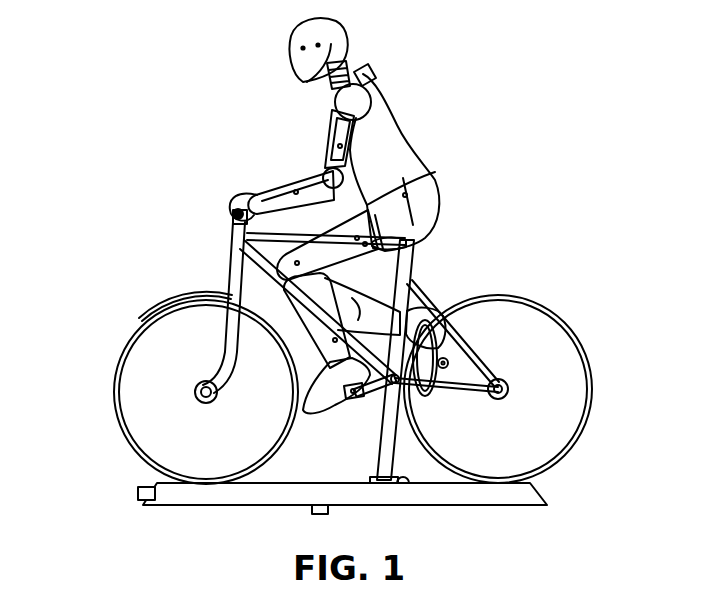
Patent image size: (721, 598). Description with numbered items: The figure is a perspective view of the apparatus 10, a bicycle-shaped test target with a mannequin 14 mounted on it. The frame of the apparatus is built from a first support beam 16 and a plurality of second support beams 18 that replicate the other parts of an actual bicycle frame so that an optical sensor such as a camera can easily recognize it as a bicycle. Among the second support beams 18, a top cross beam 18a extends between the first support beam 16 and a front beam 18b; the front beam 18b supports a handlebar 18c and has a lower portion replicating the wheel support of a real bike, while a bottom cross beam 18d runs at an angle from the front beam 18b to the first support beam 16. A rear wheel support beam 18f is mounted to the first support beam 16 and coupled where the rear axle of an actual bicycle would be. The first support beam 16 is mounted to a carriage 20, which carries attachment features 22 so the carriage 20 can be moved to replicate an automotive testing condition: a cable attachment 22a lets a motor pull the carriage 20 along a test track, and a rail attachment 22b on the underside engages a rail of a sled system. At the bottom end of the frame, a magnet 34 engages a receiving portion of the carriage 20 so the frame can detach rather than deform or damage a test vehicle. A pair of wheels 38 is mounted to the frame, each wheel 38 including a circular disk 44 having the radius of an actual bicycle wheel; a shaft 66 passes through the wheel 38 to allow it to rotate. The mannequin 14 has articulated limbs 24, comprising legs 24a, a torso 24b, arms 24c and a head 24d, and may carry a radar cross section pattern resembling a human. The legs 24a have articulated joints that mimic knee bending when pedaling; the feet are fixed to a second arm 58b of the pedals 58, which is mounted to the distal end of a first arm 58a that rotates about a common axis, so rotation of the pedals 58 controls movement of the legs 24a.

The apparatus 10 is at (553, 185).
The mannequin 14 is at (468, 80).
The first support beam 16 is at (430, 264).
The second support beams 18 is at (222, 270).
The top cross beam 18a is at (258, 238).
The front beam 18b is at (196, 292).
The handlebar 18c is at (231, 214).
The bottom cross beam 18d is at (258, 265).
The rear wheel support beam 18f is at (476, 398).
The carriage 20 is at (158, 522).
The attachment features 22 is at (180, 506).
The cable attachment 22a is at (138, 493).
The rail attachment 22b is at (312, 509).
The articulated limbs 24 is at (306, 159).
The legs 24a is at (299, 326).
The torso 24b is at (397, 147).
The arms 24c is at (333, 141).
The head 24d is at (337, 27).
The magnet 34 is at (410, 480).
The wheel 38 is at (78, 363).
The disk 44 is at (128, 408).
The pedals 58 is at (368, 404).
The first arm 58a is at (392, 396).
The second arm 58b is at (347, 401).
The shaft 66 is at (586, 322).